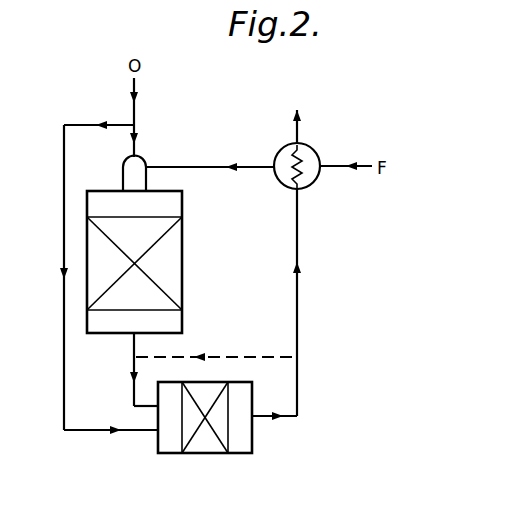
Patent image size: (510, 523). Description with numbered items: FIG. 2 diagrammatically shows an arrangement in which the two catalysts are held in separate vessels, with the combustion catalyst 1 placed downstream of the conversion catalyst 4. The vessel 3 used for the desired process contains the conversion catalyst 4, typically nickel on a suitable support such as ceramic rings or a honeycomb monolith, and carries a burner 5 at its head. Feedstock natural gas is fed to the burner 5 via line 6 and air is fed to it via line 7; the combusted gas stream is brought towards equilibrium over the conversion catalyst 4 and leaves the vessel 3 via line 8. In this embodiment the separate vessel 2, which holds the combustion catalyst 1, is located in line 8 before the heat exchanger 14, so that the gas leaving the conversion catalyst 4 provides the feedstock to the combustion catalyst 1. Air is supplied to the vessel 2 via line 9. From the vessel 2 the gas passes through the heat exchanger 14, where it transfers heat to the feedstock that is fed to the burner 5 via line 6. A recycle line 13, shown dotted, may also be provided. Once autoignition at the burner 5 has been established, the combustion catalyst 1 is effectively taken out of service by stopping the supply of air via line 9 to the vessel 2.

The combustion catalyst 1 is at (207, 445).
The vessel 2 is at (236, 454).
The vessel 3 is at (183, 229).
The conversion catalyst 4 is at (170, 257).
The burner 5 is at (122, 176).
The line 6 is at (229, 160).
The line 7 is at (137, 138).
The line 8 is at (132, 349).
The line 9 is at (100, 432).
The recycle line 13 is at (249, 361).
The heat exchanger 14 is at (318, 152).